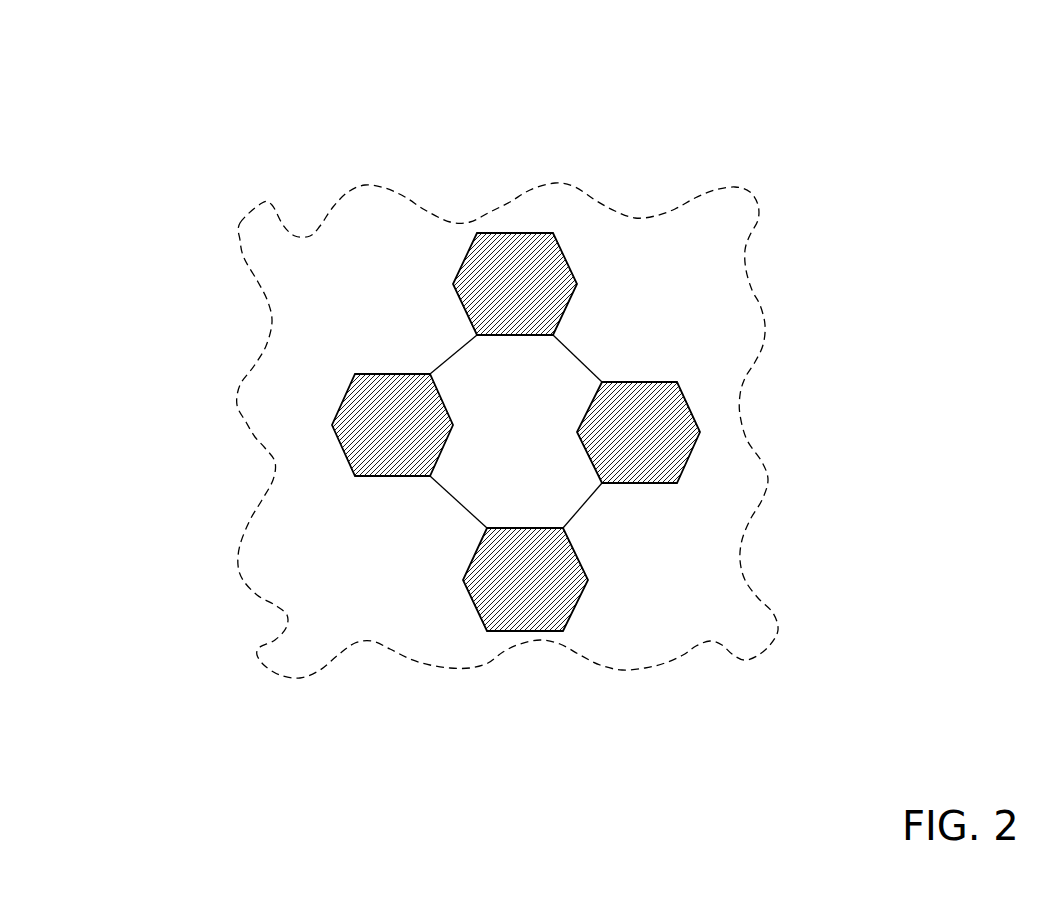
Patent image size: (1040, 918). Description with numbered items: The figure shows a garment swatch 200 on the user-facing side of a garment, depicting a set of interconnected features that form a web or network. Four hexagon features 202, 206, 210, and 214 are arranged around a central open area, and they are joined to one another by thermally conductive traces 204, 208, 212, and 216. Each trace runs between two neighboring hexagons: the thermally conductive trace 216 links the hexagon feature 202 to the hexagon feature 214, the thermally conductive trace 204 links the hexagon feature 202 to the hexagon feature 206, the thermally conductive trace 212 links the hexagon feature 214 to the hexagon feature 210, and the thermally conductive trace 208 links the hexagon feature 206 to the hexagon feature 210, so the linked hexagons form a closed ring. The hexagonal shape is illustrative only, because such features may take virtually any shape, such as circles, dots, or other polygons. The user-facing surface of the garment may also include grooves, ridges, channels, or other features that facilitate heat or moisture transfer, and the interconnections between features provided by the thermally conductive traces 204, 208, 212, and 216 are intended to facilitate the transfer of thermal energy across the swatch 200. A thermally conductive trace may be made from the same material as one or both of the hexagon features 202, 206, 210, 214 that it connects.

The garment swatch 200 is at (455, 78).
The hexagon feature 202 is at (528, 270).
The thermally conductive trace 204 is at (593, 362).
The hexagon feature 206 is at (670, 443).
The thermally conductive trace 208 is at (592, 528).
The hexagon feature 210 is at (517, 580).
The thermally conductive trace 212 is at (457, 505).
The hexagon feature 214 is at (332, 430).
The thermally conductive trace 216 is at (457, 358).